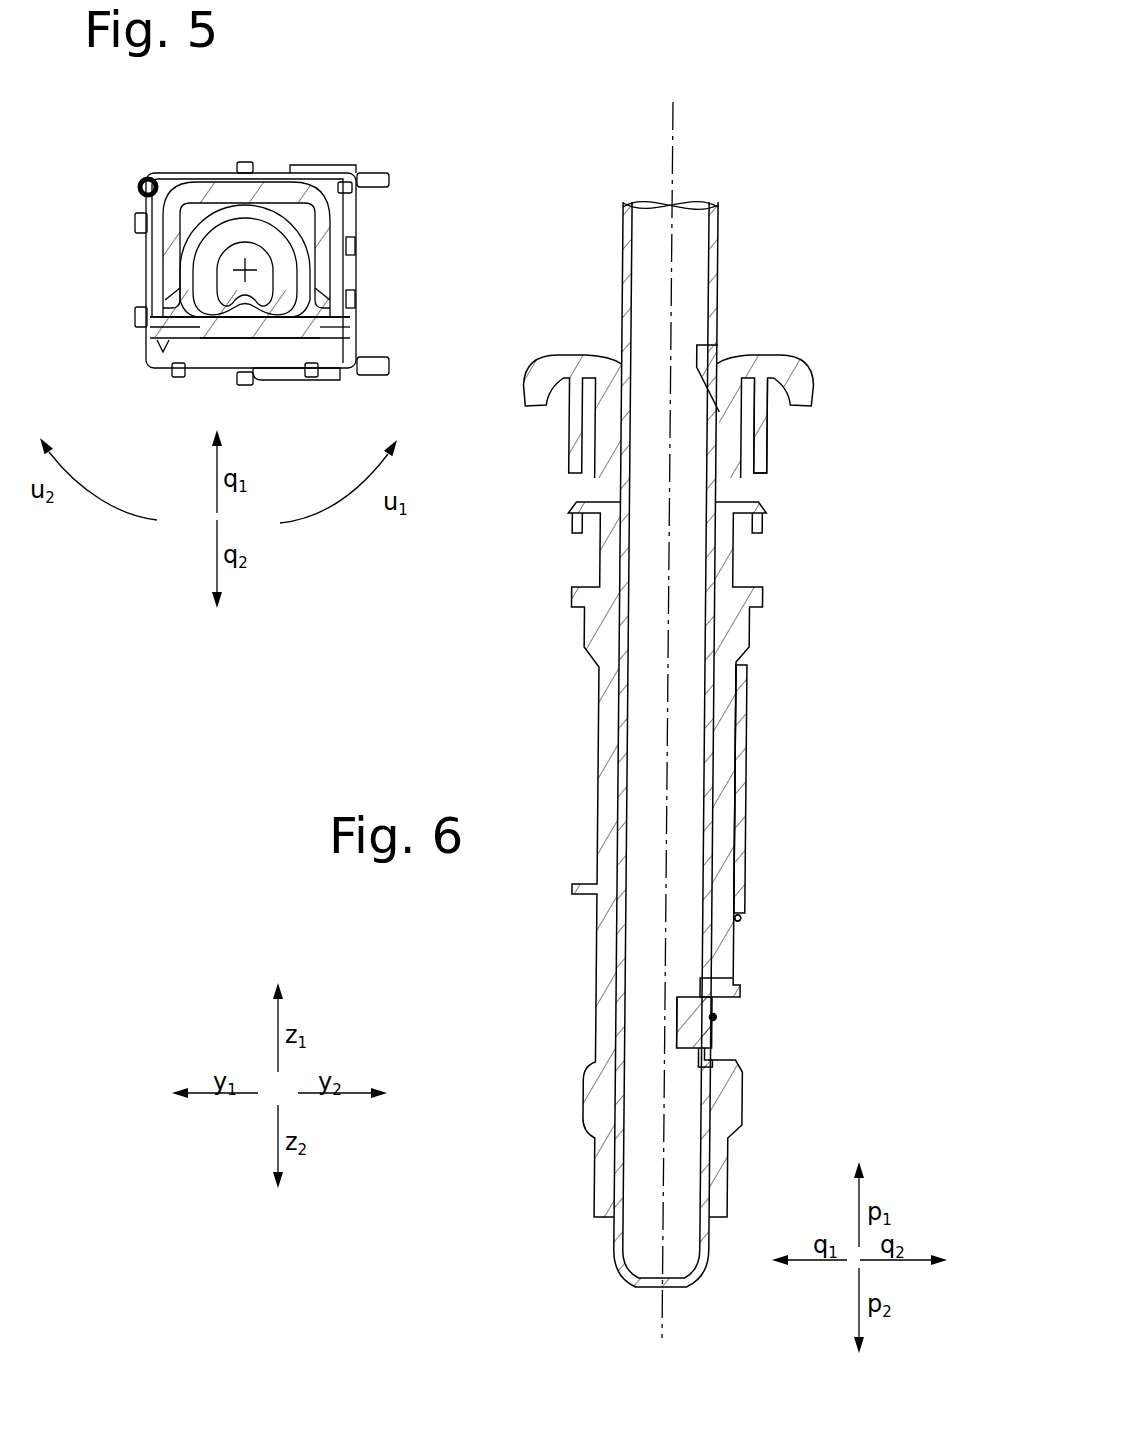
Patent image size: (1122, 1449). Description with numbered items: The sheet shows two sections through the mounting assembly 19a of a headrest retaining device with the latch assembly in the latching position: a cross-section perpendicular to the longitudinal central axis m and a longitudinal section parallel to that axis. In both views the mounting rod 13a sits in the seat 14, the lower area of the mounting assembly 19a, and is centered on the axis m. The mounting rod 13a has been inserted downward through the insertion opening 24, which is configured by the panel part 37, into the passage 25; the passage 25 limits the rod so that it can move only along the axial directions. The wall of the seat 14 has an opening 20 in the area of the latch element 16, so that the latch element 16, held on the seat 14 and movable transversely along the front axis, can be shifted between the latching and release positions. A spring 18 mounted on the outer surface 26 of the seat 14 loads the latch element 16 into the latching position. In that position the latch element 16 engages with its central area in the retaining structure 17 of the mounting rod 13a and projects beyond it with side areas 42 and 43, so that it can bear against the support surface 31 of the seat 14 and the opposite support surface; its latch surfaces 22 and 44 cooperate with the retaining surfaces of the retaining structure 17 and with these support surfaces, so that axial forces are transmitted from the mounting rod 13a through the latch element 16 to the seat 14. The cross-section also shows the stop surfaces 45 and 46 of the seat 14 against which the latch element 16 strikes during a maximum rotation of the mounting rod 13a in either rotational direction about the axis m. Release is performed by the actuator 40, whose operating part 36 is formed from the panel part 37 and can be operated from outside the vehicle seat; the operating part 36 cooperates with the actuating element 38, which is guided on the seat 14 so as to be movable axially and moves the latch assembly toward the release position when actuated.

In FIG. 5, the mounting rod 13a is at (277, 223).
In FIG. 6, the mounting rod 13a is at (720, 262).
In FIG. 5, the seat 14 is at (228, 190).
In FIG. 6, the seat 14 is at (598, 605).
In FIG. 5, the latch element 16 is at (205, 328).
In FIG. 6, the latch element 16 is at (705, 1035).
In FIG. 5, the retaining structure 17 is at (229, 349).
In FIG. 6, the retaining structure 17 is at (690, 1043).
In FIG. 6, the spring 18 is at (714, 1017).
In FIG. 5, the mounting assembly 19a is at (120, 221).
In FIG. 5, the opening 20 is at (285, 353).
In FIG. 6, the latch surface 22 is at (699, 997).
In FIG. 6, the insertion opening 24 is at (608, 338).
In FIG. 6, the passage 25 is at (644, 682).
In FIG. 6, the outer surface 26 is at (751, 740).
In FIG. 5, the support surface 31 is at (163, 328).
In FIG. 6, the operating part 36 is at (834, 356).
In FIG. 6, the panel part 37 is at (760, 430).
In FIG. 6, the actuating element 38 is at (742, 800).
In FIG. 6, the actuator 40 is at (768, 894).
In FIG. 5, the side area 42 is at (148, 334).
In FIG. 5, the side area 43 is at (346, 331).
In FIG. 6, the latch surface 44 is at (705, 1067).
In FIG. 5, the stop surface 45 is at (310, 300).
In FIG. 5, the stop surface 46 is at (147, 306).
In FIG. 5, the longitudinal central axis m is at (255, 262).
In FIG. 6, the longitudinal central axis m is at (658, 128).